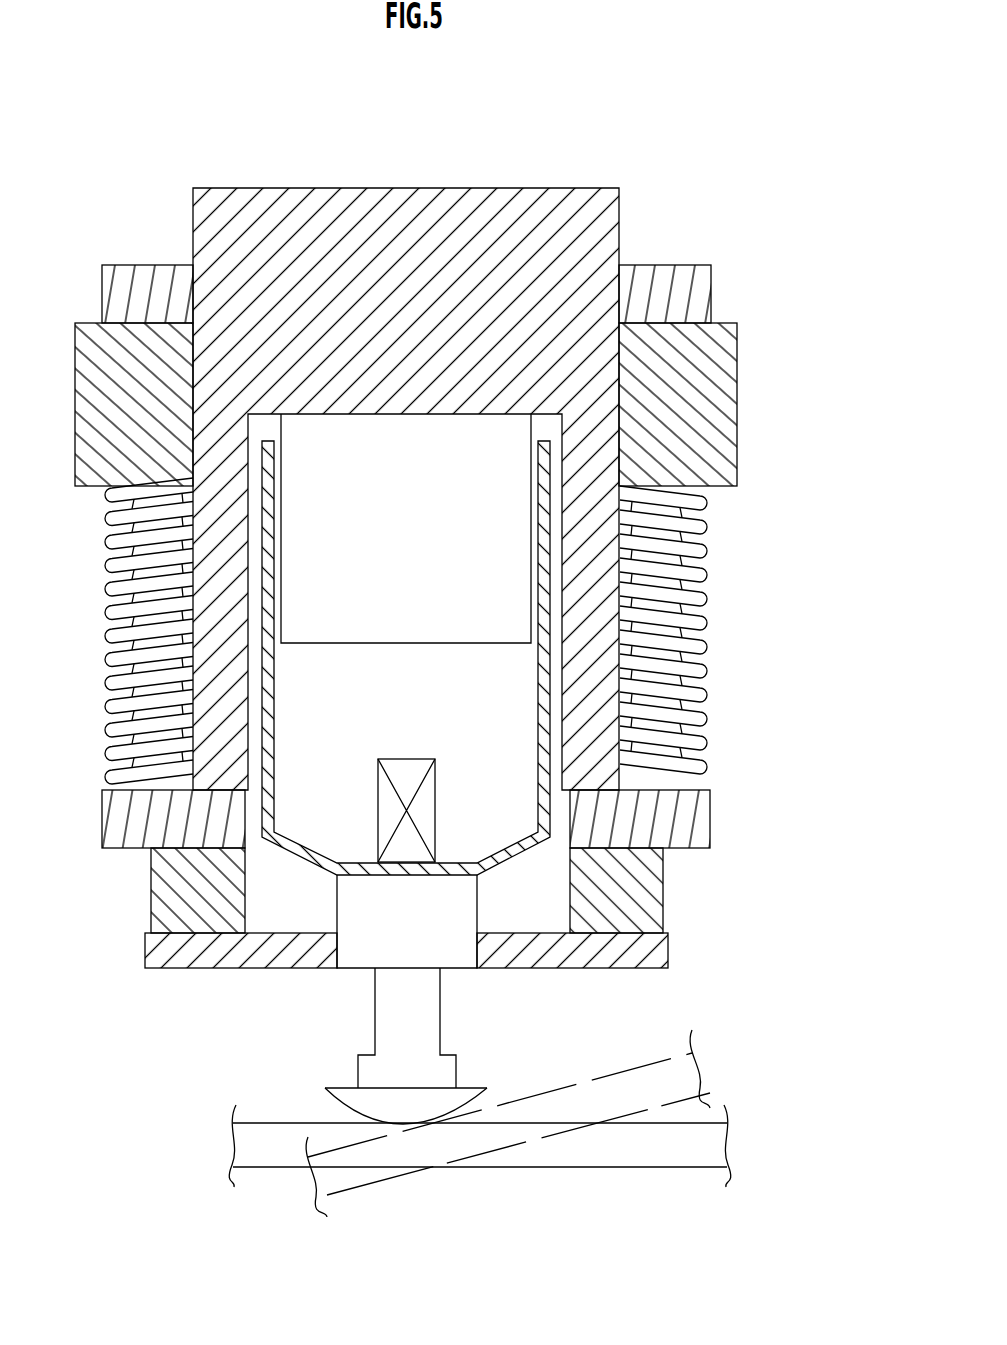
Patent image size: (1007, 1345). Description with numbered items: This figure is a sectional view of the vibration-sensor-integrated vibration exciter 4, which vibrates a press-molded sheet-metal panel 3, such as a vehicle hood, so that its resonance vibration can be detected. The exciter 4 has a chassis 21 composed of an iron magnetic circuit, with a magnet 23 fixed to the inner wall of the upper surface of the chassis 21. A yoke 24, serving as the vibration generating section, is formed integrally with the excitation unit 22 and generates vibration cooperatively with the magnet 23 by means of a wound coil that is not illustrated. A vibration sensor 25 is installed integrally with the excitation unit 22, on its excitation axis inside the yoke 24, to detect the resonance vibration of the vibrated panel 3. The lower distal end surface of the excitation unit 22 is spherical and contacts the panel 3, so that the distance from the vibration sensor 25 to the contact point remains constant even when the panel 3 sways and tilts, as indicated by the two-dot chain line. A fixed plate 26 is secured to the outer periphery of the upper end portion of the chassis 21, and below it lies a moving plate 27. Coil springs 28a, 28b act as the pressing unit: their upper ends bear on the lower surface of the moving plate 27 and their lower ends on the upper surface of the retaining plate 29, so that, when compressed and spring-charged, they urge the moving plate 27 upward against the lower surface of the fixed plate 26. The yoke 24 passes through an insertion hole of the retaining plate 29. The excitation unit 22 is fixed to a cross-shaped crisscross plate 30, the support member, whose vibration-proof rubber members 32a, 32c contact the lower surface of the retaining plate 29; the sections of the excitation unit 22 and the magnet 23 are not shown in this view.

The vibration-sensor-integrated vibration exciter 4 is at (636, 161).
The chassis 21 is at (402, 213).
The excitation unit 22 is at (460, 908).
The magnet 23 is at (410, 624).
The yoke 24 is at (266, 745).
The vibration sensor 25 is at (424, 806).
The fixed plate 26 is at (697, 293).
The moving plate 27 is at (715, 408).
The coil spring 28a is at (108, 634).
The coil spring 28b is at (700, 600).
The retaining plate 29 is at (693, 817).
The crisscross plate 30 is at (652, 950).
The vibration-proof rubber member 32a is at (165, 893).
The vibration-proof rubber member 32c is at (648, 890).
The panel 3 is at (271, 1124).